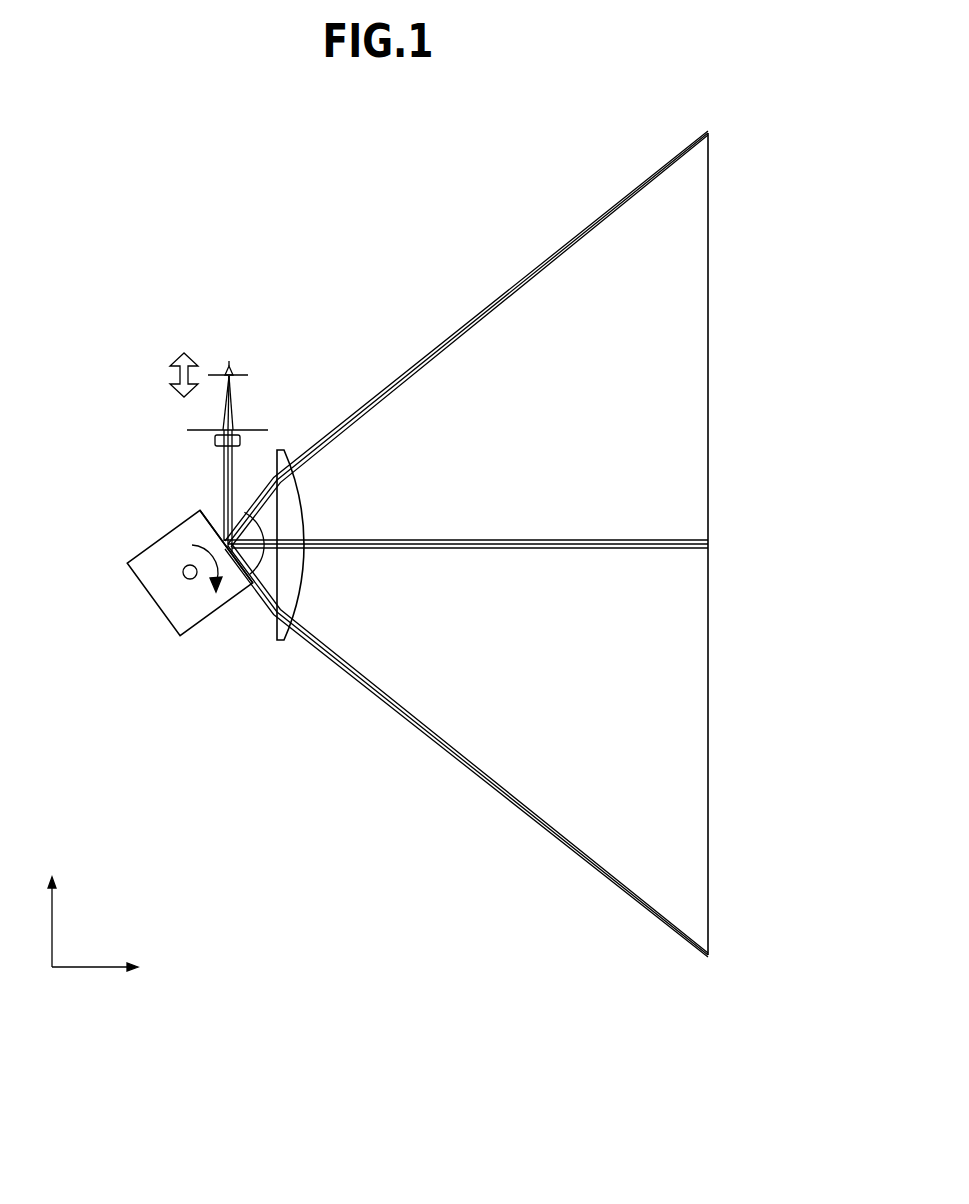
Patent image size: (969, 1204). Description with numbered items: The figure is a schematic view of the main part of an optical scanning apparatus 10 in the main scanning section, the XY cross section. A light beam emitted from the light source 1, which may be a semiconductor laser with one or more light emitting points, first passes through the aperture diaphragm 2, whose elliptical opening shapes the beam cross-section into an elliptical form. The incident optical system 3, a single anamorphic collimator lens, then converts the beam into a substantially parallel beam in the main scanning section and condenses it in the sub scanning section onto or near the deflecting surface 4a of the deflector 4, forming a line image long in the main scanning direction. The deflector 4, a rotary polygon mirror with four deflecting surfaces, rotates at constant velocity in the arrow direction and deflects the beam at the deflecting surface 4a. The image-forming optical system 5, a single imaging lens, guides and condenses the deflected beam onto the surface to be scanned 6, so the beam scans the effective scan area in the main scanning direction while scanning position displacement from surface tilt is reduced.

The light source 1 is at (232, 371).
The aperture diaphragm 2 is at (250, 429).
The incident optical system 3 is at (216, 447).
The deflector 4 is at (163, 590).
The deflecting surface 4a is at (215, 529).
The image-forming optical system 5 is at (295, 579).
The surface to be scanned 6 is at (710, 372).
The optical scanning apparatus 10 is at (386, 1043).